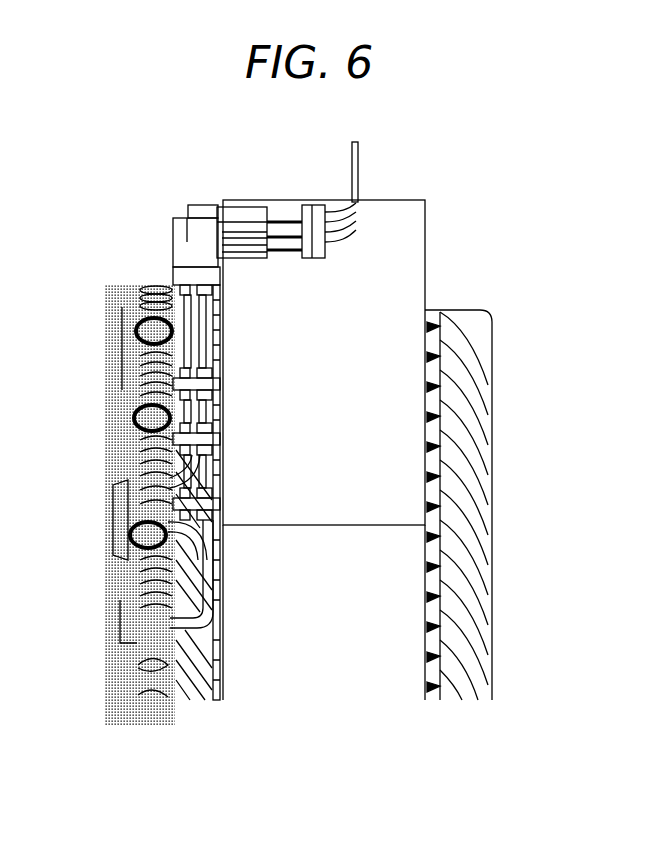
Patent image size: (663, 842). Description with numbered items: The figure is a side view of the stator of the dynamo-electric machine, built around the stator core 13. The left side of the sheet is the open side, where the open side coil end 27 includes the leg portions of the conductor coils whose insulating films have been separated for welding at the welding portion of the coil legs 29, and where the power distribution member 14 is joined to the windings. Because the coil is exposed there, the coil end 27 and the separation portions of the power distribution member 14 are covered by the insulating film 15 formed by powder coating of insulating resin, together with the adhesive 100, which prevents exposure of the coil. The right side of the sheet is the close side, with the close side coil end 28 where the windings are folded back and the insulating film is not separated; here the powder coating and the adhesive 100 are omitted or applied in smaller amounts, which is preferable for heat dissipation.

The stator core 13 is at (410, 245).
The power distribution member 14 is at (245, 204).
The insulating film 15 is at (113, 678).
The open side coil end 27 is at (155, 284).
The close side coil end 28 is at (484, 296).
The welding portion of coil leg 29 is at (140, 300).
The adhesive 100 is at (132, 530).